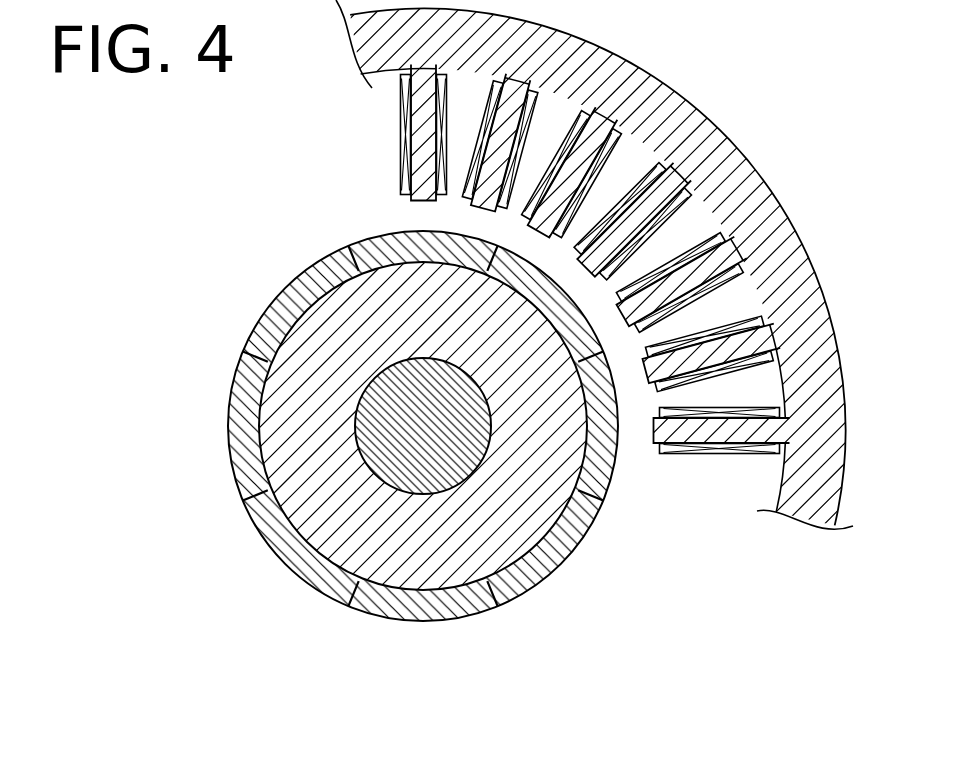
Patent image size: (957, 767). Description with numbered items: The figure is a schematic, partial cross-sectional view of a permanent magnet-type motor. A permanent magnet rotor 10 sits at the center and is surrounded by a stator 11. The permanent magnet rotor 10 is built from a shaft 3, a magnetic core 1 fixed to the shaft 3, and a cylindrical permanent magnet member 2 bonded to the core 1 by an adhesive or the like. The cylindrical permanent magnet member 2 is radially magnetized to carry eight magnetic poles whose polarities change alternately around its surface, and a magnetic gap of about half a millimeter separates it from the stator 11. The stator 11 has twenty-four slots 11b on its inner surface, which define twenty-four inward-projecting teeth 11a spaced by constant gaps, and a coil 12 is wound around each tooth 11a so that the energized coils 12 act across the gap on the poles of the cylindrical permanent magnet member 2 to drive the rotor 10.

The magnetic core 1 is at (300, 517).
The cylindrical permanent magnet member 2 is at (280, 292).
The shaft 3 is at (355, 408).
The permanent magnet rotor 10 is at (612, 351).
The stator 11 is at (717, 140).
The teeth 11a is at (686, 440).
The slots 11b is at (758, 395).
The coils 12 is at (402, 160).